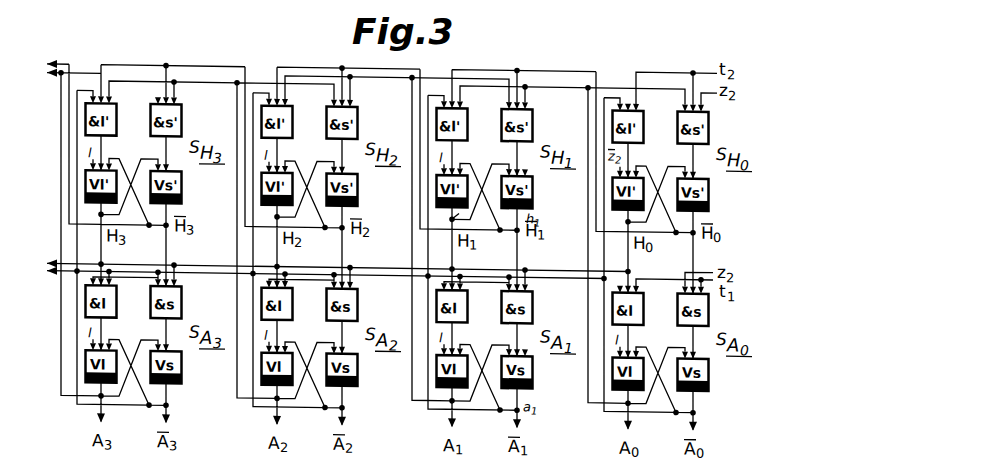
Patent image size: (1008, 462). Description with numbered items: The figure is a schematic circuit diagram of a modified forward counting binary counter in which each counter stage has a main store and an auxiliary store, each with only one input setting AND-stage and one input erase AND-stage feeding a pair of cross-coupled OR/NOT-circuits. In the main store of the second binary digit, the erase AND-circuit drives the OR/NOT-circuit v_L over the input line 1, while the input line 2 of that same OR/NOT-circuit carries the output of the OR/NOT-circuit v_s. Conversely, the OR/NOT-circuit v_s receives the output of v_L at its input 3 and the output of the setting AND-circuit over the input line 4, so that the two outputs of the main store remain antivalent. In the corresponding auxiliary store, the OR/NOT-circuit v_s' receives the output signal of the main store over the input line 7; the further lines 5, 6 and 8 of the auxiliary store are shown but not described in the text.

The input line 1 is at (447, 337).
The input line 2 is at (470, 342).
The input 3 is at (494, 337).
The input line 4 is at (524, 340).
The l-input line of memory element Vl' of stage SH1 5 is at (449, 159).
The coupling line from output of Vs' to input of Vl' (stage SH1) 6 is at (469, 163).
The input line 7 is at (482, 162).
The input line of memory element Vs' of stage SH1 8 is at (526, 158).